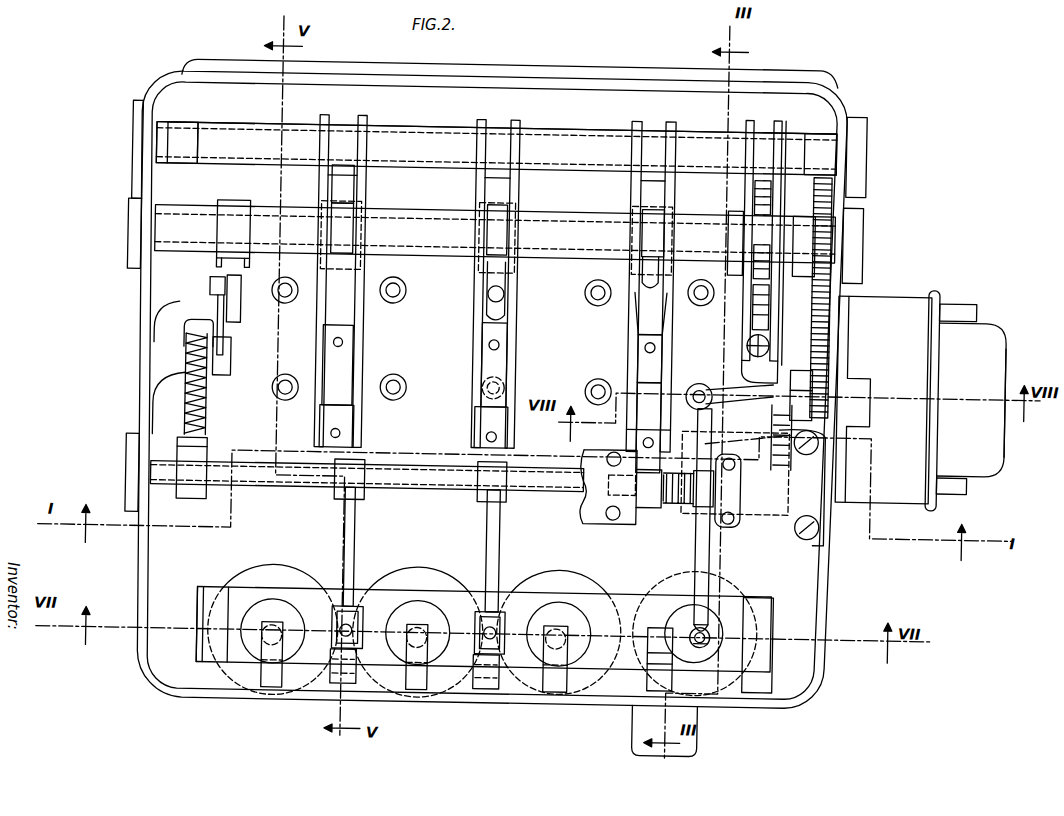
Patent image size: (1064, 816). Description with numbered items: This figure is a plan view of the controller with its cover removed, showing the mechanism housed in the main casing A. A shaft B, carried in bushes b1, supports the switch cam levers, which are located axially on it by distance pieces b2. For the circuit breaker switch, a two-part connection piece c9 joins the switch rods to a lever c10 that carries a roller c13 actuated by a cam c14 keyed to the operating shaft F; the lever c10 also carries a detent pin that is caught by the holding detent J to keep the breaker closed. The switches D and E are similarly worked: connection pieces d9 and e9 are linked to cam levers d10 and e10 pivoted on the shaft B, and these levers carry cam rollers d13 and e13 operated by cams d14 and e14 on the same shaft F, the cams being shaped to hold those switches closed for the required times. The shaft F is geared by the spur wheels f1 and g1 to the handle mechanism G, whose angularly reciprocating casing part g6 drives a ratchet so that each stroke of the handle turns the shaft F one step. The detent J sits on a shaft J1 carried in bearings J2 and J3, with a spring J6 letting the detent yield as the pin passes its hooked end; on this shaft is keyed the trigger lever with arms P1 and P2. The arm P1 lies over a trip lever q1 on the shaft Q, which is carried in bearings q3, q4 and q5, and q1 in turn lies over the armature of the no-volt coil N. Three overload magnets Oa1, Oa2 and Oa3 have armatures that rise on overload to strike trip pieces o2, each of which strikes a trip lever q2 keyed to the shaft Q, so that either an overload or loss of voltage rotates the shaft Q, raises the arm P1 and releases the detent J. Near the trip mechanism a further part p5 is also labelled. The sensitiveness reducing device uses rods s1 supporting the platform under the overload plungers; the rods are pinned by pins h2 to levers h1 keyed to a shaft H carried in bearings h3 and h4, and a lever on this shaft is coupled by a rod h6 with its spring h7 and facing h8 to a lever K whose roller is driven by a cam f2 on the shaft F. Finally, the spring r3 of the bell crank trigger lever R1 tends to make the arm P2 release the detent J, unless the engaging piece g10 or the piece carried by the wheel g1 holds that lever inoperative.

The main casing A is at (136, 186).
The shaft B is at (213, 168).
The bushes b1 is at (170, 138).
The distance pieces b2 is at (240, 131).
The operating shaft F is at (296, 228).
The spur wheel f1 is at (836, 236).
The cam f2 is at (218, 273).
The handle mechanism G is at (966, 298).
The spur wheel g1 is at (812, 376).
The angularly reciprocating part of handle casing g6 is at (995, 446).
The engaging piece g10 is at (818, 412).
The shaft H is at (167, 488).
The levers h1 is at (231, 358).
The pin h2 is at (186, 330).
The bearing h3 is at (128, 452).
The bearing h4 is at (582, 511).
The rod h6 is at (178, 400).
The spring h7 is at (207, 407).
The facing h8 is at (209, 442).
The lever K is at (224, 331).
The first selector slider e is at (340, 281).
The connection piece e9 is at (346, 352).
The cam lever e10 is at (353, 317).
The cam roller e13 is at (347, 239).
The cam e14 is at (347, 187).
The second selector slider d is at (495, 284).
The connection piece d9 is at (487, 414).
The cam lever d10 is at (499, 344).
The cam roller d13 is at (503, 236).
The cam d14 is at (492, 308).
The third selector slider c is at (651, 286).
The two-part connection piece c9 is at (651, 330).
The lever c10 is at (637, 349).
The roller c13 is at (640, 209).
The cam c14 is at (648, 267).
The holding detent J is at (658, 505).
The shaft J1 is at (680, 505).
The bearing J2 is at (625, 524).
The bearing J3 is at (736, 524).
The spring J6 is at (680, 474).
The trigger lever arm P1 is at (720, 598).
The trigger lever arm P2 is at (770, 431).
The bell crank trigger lever R1 is at (762, 392).
The spring r3 is at (776, 460).
The shaft Q is at (306, 674).
The trip lever q1 is at (672, 632).
The trip lever q2 is at (280, 636).
The bearing q3 is at (218, 670).
The bearing q4 is at (494, 680).
The bearing q5 is at (764, 655).
The overload magnet Oa1 is at (277, 582).
The overload magnet Oa2 is at (427, 580).
The overload magnet Oa3 is at (559, 583).
The no-volt coil N is at (672, 590).
The trip piece o2 is at (282, 642).
The rods s1 is at (349, 640).
The rod end p5 is at (714, 640).